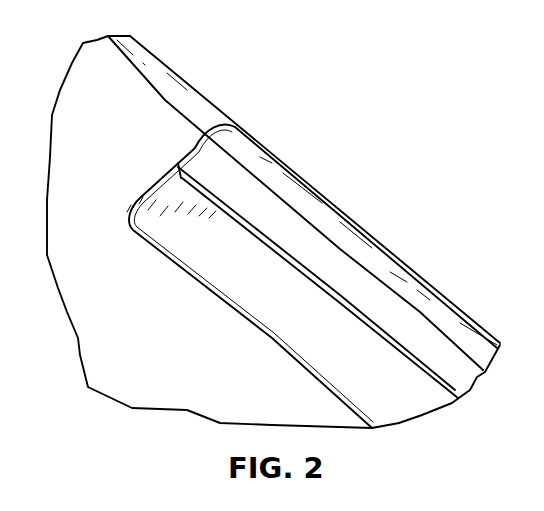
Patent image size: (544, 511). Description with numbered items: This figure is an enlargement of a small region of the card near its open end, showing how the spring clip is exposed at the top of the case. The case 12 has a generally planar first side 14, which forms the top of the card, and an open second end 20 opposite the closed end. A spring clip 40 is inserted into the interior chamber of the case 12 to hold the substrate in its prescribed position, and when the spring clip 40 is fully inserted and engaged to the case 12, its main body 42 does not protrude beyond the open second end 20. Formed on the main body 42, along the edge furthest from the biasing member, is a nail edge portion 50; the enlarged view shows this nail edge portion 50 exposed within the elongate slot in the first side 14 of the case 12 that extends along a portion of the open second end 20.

The case 12 is at (216, 104).
The first side 14 is at (83, 313).
The open second end 20 is at (157, 57).
The spring clip 40 is at (331, 202).
The main body 42 is at (406, 401).
The nail edge portion 50 is at (378, 260).